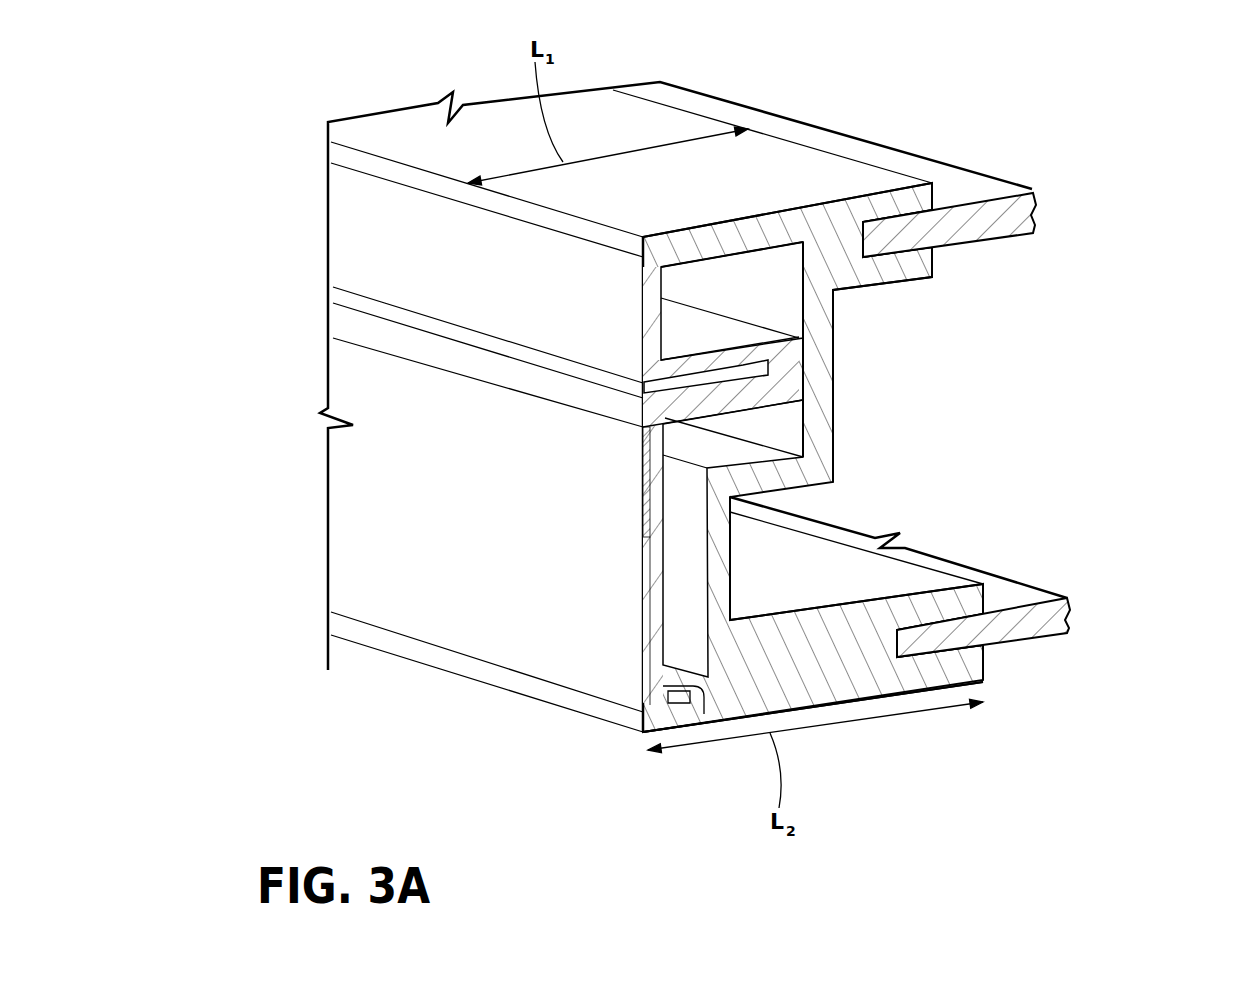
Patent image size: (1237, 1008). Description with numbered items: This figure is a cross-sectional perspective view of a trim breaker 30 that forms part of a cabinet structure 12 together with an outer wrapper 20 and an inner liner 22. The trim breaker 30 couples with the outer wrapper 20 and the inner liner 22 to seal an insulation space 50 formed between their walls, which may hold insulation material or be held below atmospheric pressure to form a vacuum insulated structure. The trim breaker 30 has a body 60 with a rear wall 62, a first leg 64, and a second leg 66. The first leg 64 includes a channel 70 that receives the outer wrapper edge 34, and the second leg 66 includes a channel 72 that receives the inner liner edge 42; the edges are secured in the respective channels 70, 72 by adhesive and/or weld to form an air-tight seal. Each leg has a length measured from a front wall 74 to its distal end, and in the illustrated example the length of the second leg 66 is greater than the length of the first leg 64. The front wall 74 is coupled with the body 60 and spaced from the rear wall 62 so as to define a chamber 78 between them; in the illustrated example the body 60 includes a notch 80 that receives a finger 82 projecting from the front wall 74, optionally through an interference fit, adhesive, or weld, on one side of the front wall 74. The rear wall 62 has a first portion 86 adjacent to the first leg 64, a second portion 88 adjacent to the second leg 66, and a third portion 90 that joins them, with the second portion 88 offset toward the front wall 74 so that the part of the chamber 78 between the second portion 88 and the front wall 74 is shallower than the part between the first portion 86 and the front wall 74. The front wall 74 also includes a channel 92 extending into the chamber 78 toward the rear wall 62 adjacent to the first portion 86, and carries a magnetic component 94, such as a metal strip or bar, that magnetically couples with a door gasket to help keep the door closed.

The cabinet structure 12 is at (1102, 157).
The outer wrapper 20 is at (973, 202).
The inner liner 22 is at (1022, 604).
The trim breaker 30 is at (613, 742).
The outer wrapper edge 34 is at (863, 225).
The inner liner edge 42 is at (920, 640).
The insulation space 50 is at (897, 450).
The body 60 is at (687, 100).
The rear wall 62 is at (835, 390).
The first leg 64 is at (800, 187).
The second leg 66 is at (797, 708).
The channel 70 is at (903, 212).
The channel 72 is at (985, 680).
The front wall 74 is at (360, 242).
The chamber 78 is at (735, 297).
The notch 80 is at (698, 700).
The finger 82 is at (680, 700).
The first portion 86 is at (820, 342).
The second portion 88 is at (725, 557).
The third portion 90 is at (768, 482).
The channel 92 is at (697, 355).
The magnetic component 94 is at (440, 447).